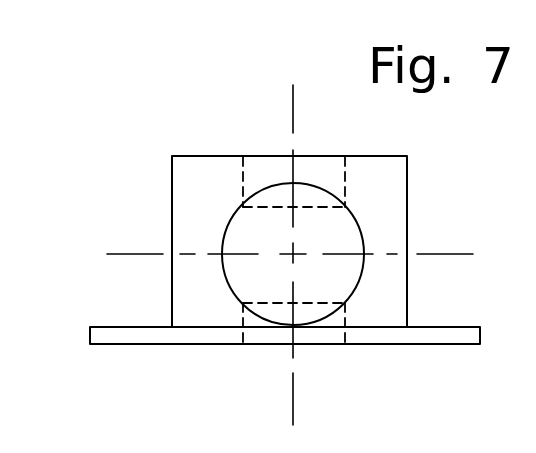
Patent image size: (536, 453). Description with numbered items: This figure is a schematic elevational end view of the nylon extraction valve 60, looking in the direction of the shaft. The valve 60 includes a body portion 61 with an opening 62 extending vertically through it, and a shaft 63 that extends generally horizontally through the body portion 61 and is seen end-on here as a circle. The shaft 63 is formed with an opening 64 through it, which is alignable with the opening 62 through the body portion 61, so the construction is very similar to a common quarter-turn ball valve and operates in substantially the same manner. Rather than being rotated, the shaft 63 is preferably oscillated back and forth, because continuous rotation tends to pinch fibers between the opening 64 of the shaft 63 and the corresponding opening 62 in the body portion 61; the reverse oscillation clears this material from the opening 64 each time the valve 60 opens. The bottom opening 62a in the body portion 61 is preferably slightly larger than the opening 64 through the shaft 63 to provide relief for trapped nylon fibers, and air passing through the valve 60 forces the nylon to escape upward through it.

The valve 60 is at (178, 120).
The body portion 61 is at (408, 323).
The opening 62 is at (347, 176).
The bottom opening 62a is at (345, 333).
The shaft 63 is at (363, 234).
The opening 64 is at (267, 208).